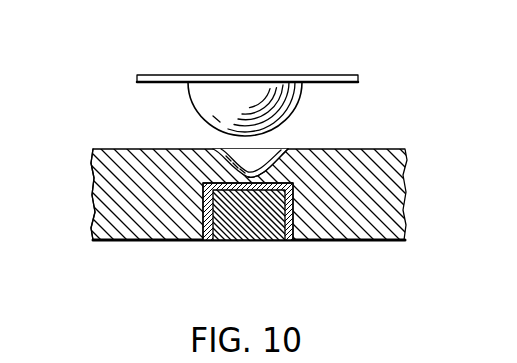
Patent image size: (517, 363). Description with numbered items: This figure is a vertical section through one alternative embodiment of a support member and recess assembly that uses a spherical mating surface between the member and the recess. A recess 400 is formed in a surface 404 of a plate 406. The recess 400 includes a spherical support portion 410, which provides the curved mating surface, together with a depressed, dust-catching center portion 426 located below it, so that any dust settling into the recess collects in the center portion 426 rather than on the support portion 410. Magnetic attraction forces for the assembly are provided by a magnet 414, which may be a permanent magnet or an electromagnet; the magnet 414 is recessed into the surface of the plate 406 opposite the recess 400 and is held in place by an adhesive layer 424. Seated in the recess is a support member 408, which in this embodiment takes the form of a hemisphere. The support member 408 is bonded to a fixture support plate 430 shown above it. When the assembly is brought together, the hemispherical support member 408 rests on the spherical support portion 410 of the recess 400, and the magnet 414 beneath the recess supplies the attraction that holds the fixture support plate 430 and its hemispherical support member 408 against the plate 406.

The recess 400 is at (278, 139).
The surface 404 is at (121, 149).
The plate 406 is at (93, 196).
The support member 408 is at (189, 88).
The spherical support portion 410 is at (213, 149).
The magnet 414 is at (237, 241).
The adhesive layer 424 is at (290, 241).
The center portion 426 is at (288, 149).
The fixture support plate 430 is at (160, 74).